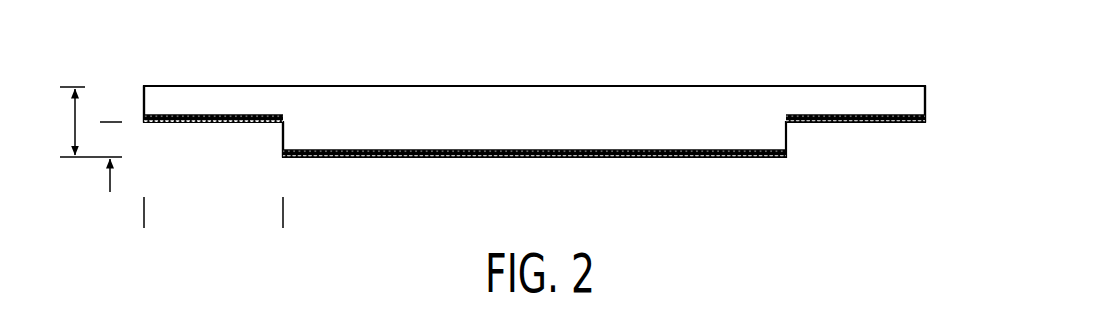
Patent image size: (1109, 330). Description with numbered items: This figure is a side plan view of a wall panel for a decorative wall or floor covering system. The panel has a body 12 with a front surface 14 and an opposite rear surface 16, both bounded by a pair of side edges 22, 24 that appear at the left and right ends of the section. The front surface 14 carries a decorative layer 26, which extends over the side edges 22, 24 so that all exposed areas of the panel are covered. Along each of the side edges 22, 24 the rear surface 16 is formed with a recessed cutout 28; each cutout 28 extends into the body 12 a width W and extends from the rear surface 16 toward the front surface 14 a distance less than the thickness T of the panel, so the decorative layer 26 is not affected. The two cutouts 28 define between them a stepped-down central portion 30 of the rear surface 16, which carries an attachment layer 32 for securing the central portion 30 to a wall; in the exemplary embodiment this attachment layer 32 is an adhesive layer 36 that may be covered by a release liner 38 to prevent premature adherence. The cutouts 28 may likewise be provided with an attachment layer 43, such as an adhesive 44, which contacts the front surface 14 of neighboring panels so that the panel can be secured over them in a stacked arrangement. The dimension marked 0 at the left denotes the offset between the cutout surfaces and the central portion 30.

The body 12 is at (366, 70).
The front surface 14 is at (270, 77).
The rear surface 16 is at (289, 167).
The side edge 22 is at (144, 101).
The side edge 24 is at (925, 101).
The decorative layer 26 is at (535, 86).
The cutouts 28 is at (233, 127).
The central portion 30 is at (508, 162).
The attachment layer 32 is at (619, 163).
The adhesive layer 36 is at (723, 158).
The release liner 38 is at (463, 158).
The attachment layer 43 is at (898, 130).
The adhesive 44 is at (813, 123).
The width W is at (281, 211).
The thickness T is at (75, 122).
The offset dimension 0 is at (110, 118).